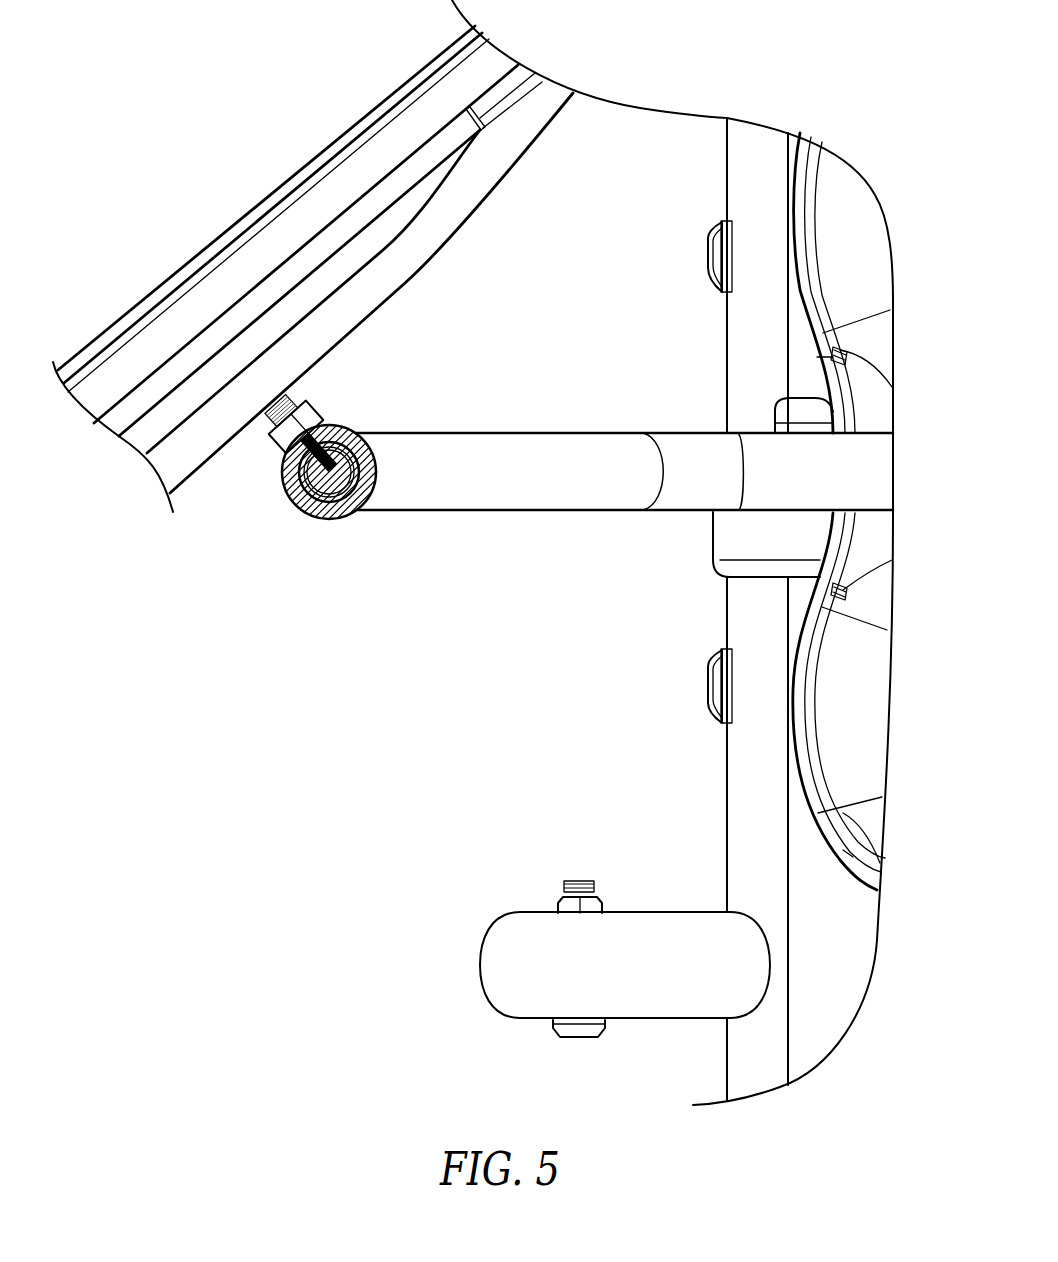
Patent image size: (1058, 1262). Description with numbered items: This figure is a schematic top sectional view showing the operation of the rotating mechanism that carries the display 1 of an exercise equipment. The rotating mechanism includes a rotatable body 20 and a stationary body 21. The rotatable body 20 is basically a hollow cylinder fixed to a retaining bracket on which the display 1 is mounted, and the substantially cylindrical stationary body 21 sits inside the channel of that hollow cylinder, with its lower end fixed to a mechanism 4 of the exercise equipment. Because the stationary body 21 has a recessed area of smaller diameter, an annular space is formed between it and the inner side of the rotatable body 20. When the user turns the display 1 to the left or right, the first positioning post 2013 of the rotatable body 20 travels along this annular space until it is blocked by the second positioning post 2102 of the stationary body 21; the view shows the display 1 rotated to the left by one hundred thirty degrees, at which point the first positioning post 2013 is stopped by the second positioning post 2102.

The display 1 is at (245, 205).
The mechanism 4 is at (562, 424).
The rotatable body 20 is at (314, 466).
The stationary body 21 is at (360, 493).
The first positioning post 2013 is at (288, 465).
The second positioning post 2102 is at (318, 513).